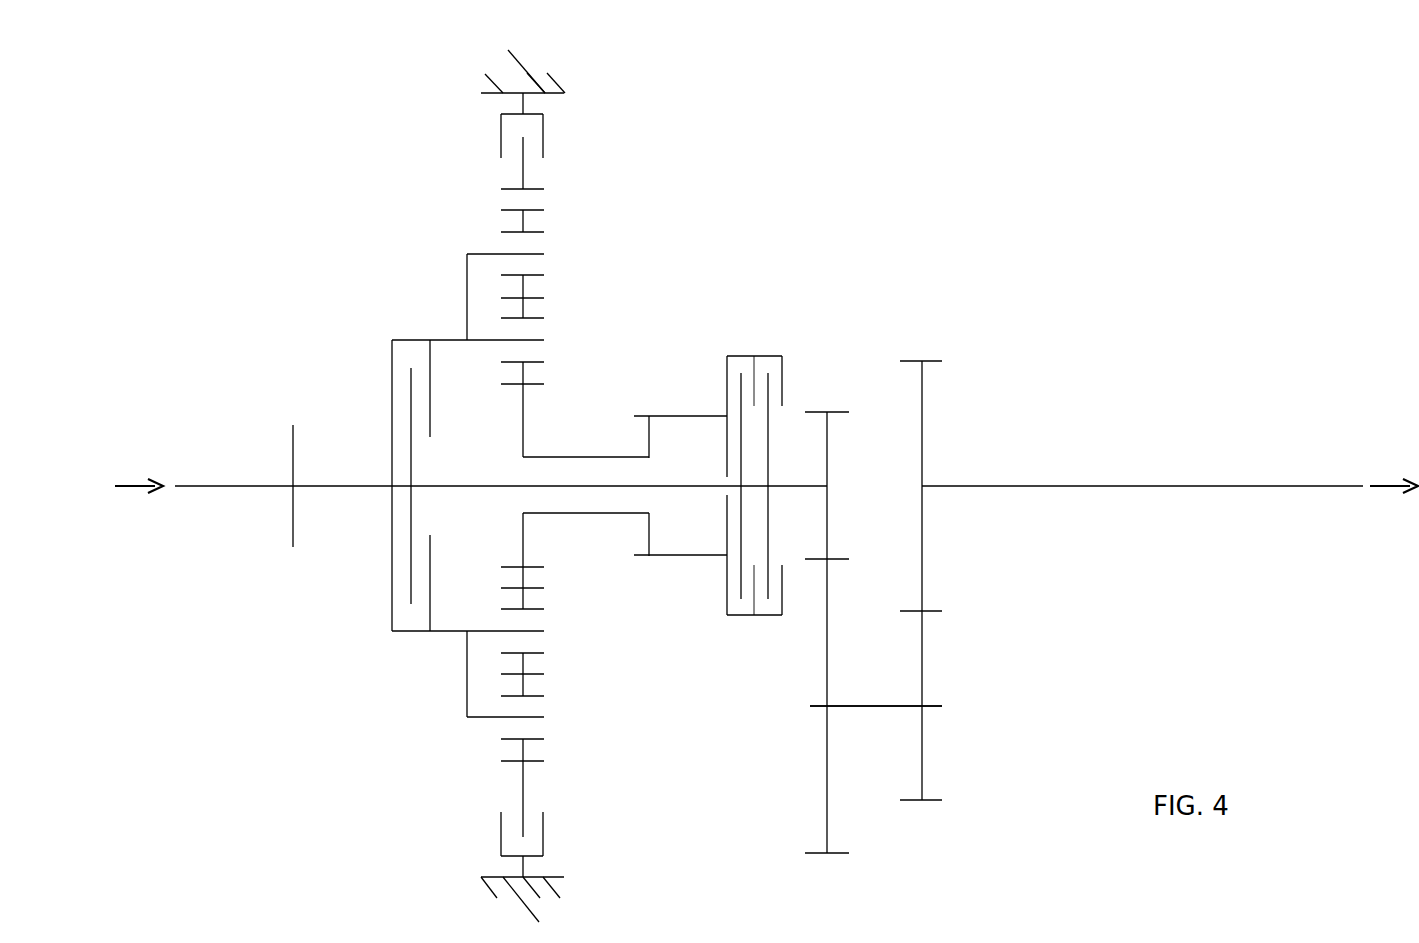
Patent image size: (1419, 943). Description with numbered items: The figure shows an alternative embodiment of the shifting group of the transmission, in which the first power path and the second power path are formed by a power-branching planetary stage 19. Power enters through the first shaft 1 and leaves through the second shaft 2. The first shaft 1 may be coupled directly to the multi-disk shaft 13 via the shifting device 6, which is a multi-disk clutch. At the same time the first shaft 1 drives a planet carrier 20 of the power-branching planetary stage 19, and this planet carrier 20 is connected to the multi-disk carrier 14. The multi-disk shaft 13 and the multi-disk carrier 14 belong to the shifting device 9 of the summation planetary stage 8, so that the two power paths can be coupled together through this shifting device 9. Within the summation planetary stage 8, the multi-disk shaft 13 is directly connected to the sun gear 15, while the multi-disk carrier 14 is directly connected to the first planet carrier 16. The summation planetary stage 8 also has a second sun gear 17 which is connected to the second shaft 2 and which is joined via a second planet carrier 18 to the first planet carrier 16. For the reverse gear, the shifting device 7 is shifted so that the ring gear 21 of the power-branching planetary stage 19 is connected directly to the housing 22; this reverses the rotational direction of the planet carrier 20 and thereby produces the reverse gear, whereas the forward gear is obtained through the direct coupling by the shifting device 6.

The first shaft 1 is at (340, 486).
The second shaft 2 is at (1153, 486).
The shifting device 6 is at (392, 580).
The shifting device 7 is at (543, 133).
The summation planetary stage 8 is at (788, 803).
The shifting device 9 is at (757, 345).
The multi-disk shaft 13 is at (503, 486).
The multi-disk carrier 14 is at (733, 356).
The sun gear 15 is at (827, 466).
The first planet carrier 16 is at (810, 706).
The second sun gear 17 is at (922, 417).
The second planet carrier 18 is at (942, 706).
The power-branching planetary stage 19 is at (497, 252).
The planet carrier 20 is at (462, 295).
The ring gear 21 is at (523, 177).
The housing 22 is at (560, 83).